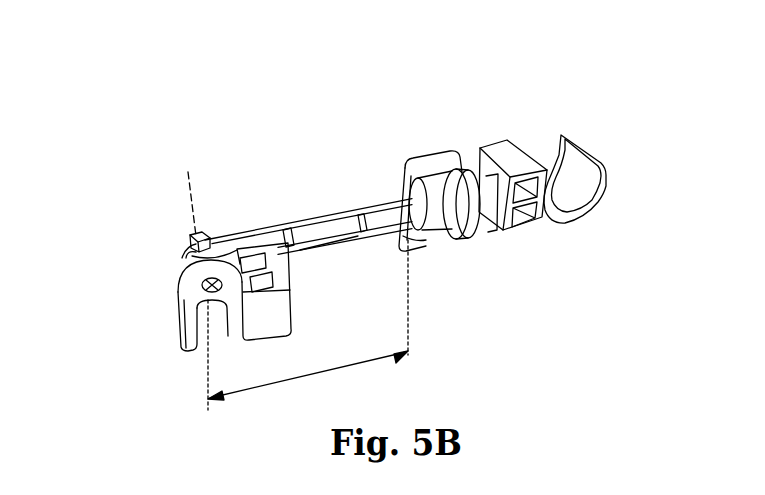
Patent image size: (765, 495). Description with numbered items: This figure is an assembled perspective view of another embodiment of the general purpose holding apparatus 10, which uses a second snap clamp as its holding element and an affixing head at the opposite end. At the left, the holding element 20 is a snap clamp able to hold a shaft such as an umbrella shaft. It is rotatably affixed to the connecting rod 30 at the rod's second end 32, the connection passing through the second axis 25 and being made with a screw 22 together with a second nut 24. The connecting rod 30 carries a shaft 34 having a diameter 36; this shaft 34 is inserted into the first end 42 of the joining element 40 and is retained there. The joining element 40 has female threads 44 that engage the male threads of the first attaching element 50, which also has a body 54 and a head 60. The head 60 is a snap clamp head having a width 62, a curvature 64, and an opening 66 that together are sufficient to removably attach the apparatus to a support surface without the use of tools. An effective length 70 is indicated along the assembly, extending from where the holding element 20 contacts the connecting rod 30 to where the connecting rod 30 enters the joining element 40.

The general purpose holding apparatus 10 is at (397, 102).
The holding element 20 is at (176, 321).
The screw 22 is at (220, 292).
The second nut 24 is at (208, 235).
The second axis 25 is at (195, 213).
The connecting rod 30 is at (314, 250).
The second end 32 is at (186, 258).
The shaft 34 is at (329, 227).
The diameter 36 is at (357, 250).
The joining element 40 is at (458, 250).
The first end 42 is at (399, 242).
The female threads 44 is at (466, 168).
The first attaching element 50 is at (504, 146).
The body 54 is at (485, 218).
The head 60 is at (538, 226).
The width 62 is at (582, 143).
The curvature 64 is at (594, 216).
The opening 66 is at (548, 153).
The effective length 70 is at (317, 372).